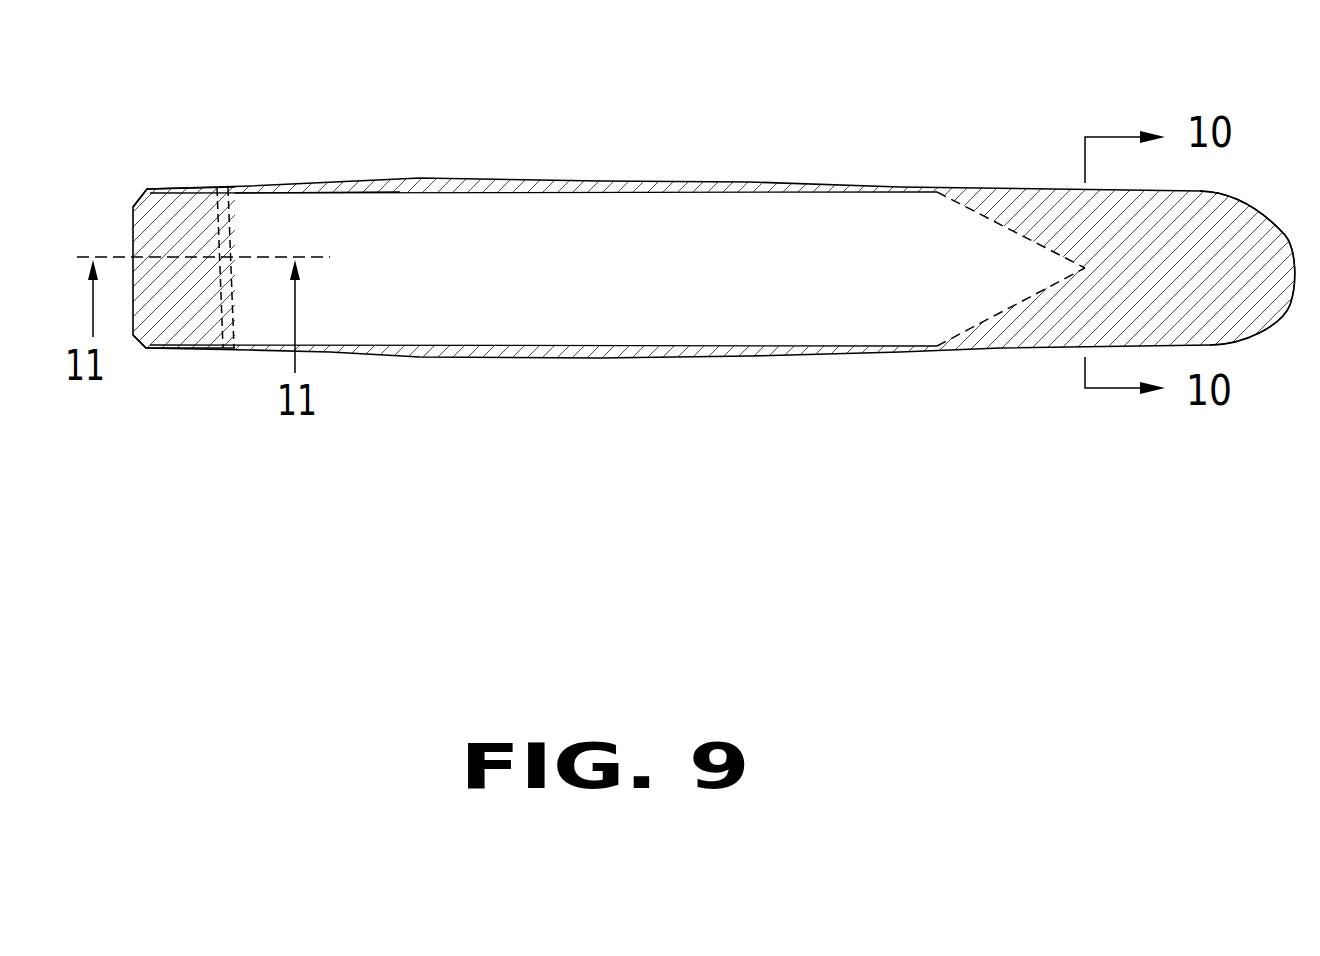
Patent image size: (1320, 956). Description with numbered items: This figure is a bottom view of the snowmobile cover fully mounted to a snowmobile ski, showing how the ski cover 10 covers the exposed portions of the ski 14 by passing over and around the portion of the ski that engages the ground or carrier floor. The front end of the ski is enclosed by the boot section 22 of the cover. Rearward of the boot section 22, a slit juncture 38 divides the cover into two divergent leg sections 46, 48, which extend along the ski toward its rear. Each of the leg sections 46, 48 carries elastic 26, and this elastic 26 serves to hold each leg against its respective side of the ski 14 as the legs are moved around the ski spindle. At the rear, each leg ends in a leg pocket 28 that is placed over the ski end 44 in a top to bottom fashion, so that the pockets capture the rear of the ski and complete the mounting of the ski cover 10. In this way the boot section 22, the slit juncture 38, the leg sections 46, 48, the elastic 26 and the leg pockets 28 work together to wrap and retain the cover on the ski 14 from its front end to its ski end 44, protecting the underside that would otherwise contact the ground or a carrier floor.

The ski cover 10 is at (856, 116).
The ski 14 is at (692, 263).
The boot section 22 is at (1243, 262).
The elastic 26 is at (987, 217).
The leg pocket 28 is at (180, 293).
The slit juncture 38 is at (1082, 272).
The ski end 44 is at (165, 208).
The leg section 46 is at (200, 207).
The leg section 48 is at (315, 248).